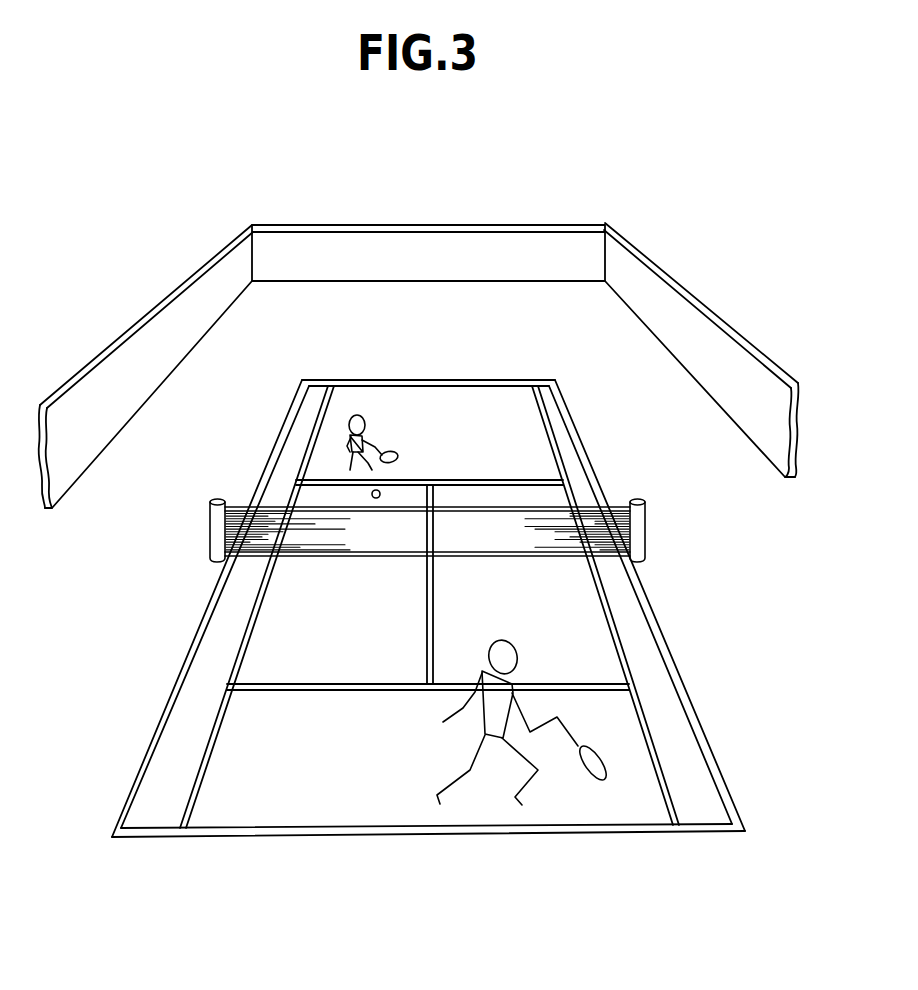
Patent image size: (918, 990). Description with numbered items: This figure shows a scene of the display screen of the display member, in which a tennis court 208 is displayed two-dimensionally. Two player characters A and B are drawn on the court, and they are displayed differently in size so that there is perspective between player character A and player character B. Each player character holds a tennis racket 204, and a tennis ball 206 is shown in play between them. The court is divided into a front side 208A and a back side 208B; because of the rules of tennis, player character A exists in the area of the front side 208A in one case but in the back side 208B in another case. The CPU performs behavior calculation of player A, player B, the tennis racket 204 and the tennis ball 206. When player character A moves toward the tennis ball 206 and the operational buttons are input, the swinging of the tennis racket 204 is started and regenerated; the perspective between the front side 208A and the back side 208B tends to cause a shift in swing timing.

The tennis court 208 is at (462, 378).
The front side 208A is at (357, 762).
The back side 208B is at (520, 427).
The tennis racket 204 is at (398, 457).
The tennis ball 206 is at (368, 494).
The player character A is at (518, 643).
The player character B is at (367, 411).